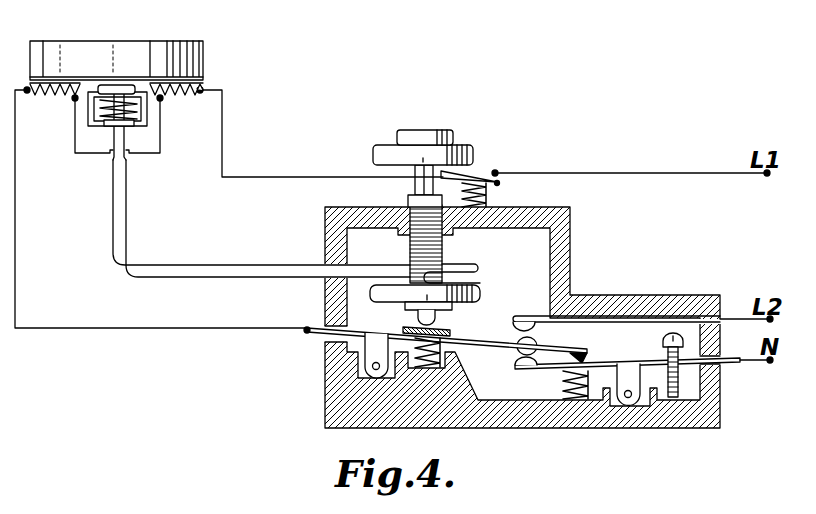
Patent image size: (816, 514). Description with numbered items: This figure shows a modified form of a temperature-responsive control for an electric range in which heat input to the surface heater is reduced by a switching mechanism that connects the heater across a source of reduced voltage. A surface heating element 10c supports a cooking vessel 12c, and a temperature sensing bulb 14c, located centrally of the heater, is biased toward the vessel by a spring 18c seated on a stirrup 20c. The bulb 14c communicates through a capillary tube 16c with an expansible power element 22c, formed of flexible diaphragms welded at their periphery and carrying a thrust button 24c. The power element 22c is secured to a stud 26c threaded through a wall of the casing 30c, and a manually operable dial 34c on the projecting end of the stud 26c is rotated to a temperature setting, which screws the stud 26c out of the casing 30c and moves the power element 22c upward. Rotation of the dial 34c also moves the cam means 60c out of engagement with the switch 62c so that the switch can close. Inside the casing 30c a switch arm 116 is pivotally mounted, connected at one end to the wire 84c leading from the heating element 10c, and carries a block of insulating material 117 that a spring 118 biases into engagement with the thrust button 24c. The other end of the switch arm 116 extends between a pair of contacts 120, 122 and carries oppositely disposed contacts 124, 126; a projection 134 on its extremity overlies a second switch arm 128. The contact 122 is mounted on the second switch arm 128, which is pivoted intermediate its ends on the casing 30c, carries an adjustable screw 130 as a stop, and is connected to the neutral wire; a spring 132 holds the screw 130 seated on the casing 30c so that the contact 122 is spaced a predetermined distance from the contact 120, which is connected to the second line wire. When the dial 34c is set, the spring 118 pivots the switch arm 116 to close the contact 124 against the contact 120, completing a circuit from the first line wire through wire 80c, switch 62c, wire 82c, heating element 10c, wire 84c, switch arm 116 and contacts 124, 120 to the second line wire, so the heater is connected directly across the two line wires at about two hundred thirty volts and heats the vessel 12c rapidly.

The surface heating element 10c is at (184, 95).
The cooking vessel 12c is at (152, 52).
The temperature sensing bulb 14c is at (118, 86).
The capillary tube 16c is at (208, 265).
The spring 18c is at (92, 104).
The stirrup 20c is at (90, 122).
The expansible power element 22c is at (483, 267).
The thrust button 24c is at (480, 297).
The stud 26c is at (410, 205).
The casing 30c is at (571, 232).
The dial 34c is at (424, 120).
The cam means 60c is at (478, 170).
The switch 62c is at (484, 176).
The wire 80c is at (605, 173).
The wire 82c is at (222, 128).
The wire 84c is at (16, 266).
The switch arm 116 is at (307, 328).
The block of insulating material 117 is at (403, 329).
The spring 118 is at (430, 370).
The contact 120 is at (505, 318).
The contact 122 is at (516, 368).
The contact 124 is at (513, 325).
The contact 126 is at (517, 347).
The second switch arm 128 is at (618, 366).
The screw 130 is at (683, 380).
The spring 132 is at (563, 386).
The projection 134 is at (595, 348).